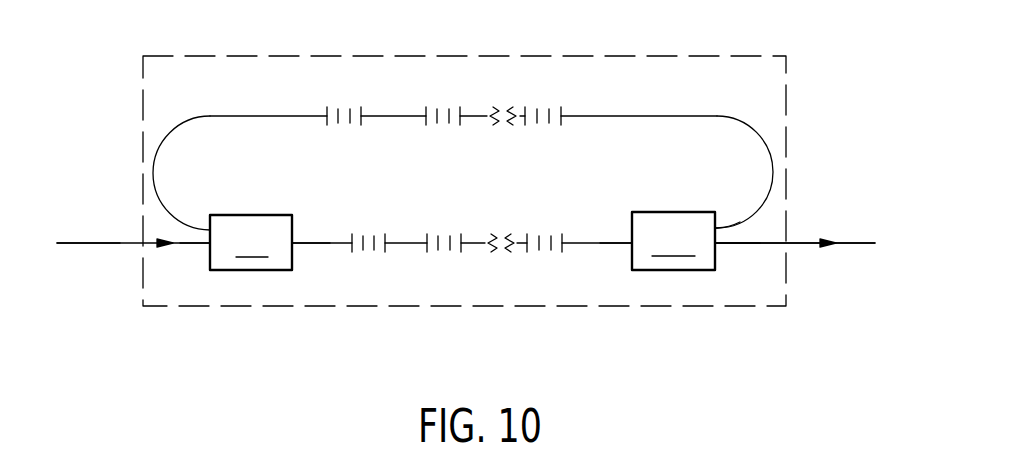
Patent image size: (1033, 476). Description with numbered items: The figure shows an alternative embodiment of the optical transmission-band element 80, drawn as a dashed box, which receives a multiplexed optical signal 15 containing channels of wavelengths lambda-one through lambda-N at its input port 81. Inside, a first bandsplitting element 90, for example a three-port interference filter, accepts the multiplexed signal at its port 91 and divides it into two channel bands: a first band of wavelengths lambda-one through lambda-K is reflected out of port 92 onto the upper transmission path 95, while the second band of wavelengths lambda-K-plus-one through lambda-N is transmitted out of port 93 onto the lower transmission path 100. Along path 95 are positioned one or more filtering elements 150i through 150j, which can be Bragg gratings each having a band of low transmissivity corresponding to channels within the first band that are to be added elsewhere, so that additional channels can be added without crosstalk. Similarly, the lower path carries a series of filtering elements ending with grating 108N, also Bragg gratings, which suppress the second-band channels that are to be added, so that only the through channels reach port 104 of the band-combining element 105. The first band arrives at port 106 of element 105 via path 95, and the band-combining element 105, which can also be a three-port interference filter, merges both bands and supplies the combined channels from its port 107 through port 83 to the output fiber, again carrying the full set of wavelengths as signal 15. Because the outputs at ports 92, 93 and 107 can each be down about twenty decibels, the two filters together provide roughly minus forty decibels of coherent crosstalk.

The optical signal with wavelengths λ1…λN 15 is at (90, 243).
The optical transmission-band element 80 is at (650, 306).
The port 81 is at (140, 243).
The port 83 is at (787, 243).
The first bandsplitting element 90 is at (251, 242).
The port 91 is at (212, 255).
The port 92 is at (212, 232).
The port 93 is at (294, 242).
The transmission path 95 is at (388, 117).
The second optical path fiber 100 is at (398, 243).
The port 104 is at (632, 238).
The band-combining element 105 is at (673, 241).
The port 106 is at (715, 228).
The port 107 is at (715, 250).
The filtering element 150i is at (343, 102).
The filtering element 150j is at (545, 124).
The optical filtering element 108N is at (548, 257).